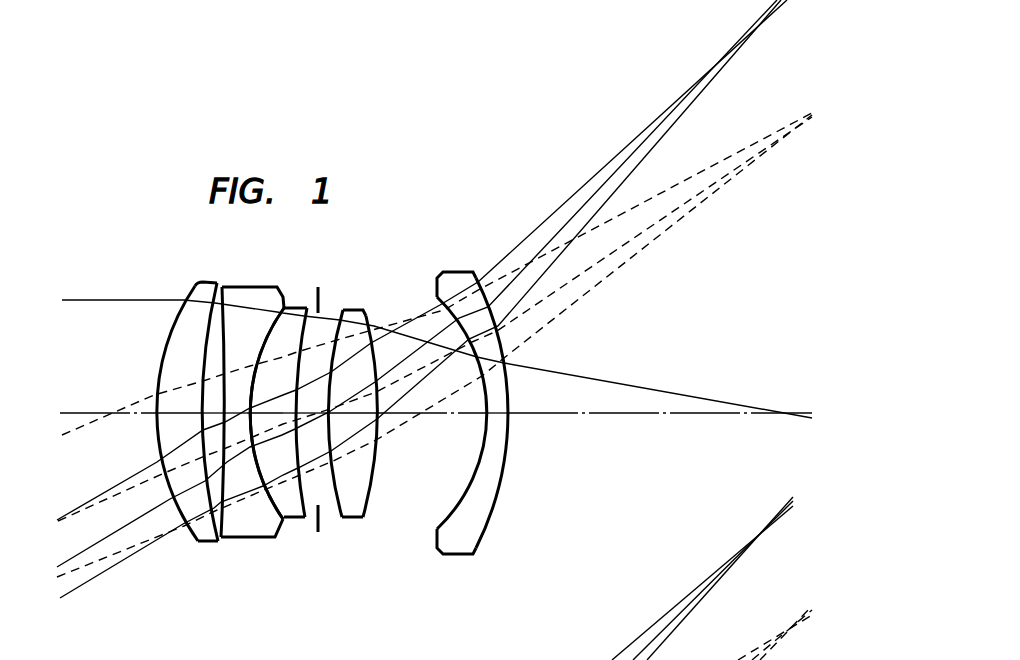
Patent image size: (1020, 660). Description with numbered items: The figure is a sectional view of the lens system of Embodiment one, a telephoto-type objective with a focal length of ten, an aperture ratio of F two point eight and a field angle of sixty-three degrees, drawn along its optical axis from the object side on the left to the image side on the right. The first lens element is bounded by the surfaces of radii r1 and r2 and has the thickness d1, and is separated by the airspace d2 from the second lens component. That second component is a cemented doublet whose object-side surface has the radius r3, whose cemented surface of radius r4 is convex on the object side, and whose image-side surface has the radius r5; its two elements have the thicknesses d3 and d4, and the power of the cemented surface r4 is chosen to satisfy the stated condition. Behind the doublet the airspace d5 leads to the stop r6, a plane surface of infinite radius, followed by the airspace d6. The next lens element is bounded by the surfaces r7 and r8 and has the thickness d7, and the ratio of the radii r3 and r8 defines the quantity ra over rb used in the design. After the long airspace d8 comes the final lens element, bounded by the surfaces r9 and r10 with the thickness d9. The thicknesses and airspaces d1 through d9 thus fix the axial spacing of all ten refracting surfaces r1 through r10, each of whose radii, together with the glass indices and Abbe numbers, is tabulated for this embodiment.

The thickness of first lens element d1 is at (176, 410).
The airspace between first and second lens components d2 is at (210, 410).
The thickness of first element of cemented doublet d3 is at (235, 408).
The thickness of second element of cemented doublet d4 is at (273, 408).
The airspace between second lens component and stop d5 is at (308, 408).
The airspace between stop and fourth lens element d6 is at (325, 412).
The thickness of fourth lens element d7 is at (360, 408).
The airspace between fourth and fifth lens elements d8 is at (450, 416).
The thickness of fifth lens element d9 is at (502, 419).
The radius of curvature of first surface r1 is at (190, 538).
The radius of curvature of second surface r2 is at (213, 545).
The radius of curvature of third surface r3 is at (229, 540).
The radius of curvature of cemented surface r4 is at (276, 532).
The radius of curvature of fifth surface r5 is at (288, 520).
The stop r6 is at (321, 532).
The radius of curvature of seventh surface r7 is at (337, 512).
The radius of curvature of eighth surface r8 is at (368, 510).
The radius of curvature of ninth surface r9 is at (437, 520).
The radius of curvature of tenth surface r10 is at (482, 536).